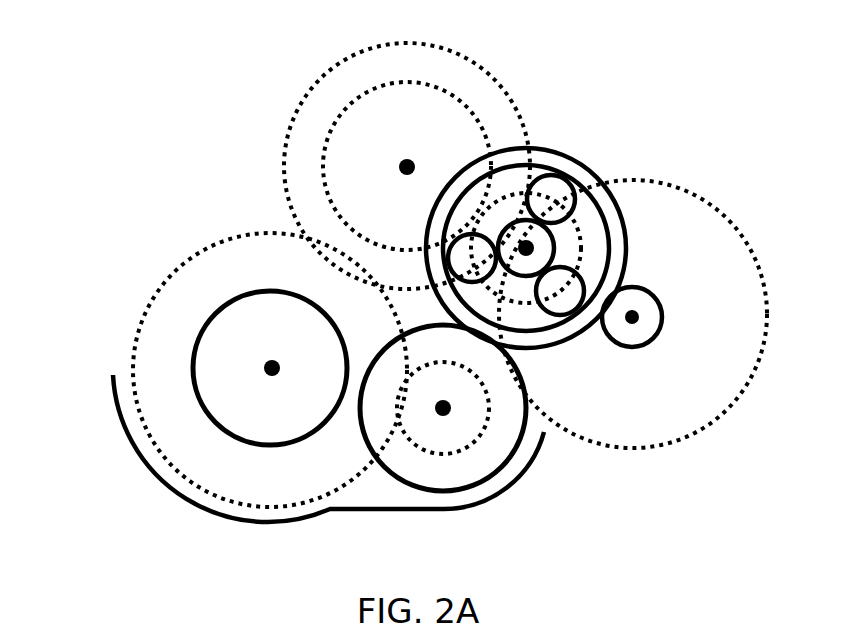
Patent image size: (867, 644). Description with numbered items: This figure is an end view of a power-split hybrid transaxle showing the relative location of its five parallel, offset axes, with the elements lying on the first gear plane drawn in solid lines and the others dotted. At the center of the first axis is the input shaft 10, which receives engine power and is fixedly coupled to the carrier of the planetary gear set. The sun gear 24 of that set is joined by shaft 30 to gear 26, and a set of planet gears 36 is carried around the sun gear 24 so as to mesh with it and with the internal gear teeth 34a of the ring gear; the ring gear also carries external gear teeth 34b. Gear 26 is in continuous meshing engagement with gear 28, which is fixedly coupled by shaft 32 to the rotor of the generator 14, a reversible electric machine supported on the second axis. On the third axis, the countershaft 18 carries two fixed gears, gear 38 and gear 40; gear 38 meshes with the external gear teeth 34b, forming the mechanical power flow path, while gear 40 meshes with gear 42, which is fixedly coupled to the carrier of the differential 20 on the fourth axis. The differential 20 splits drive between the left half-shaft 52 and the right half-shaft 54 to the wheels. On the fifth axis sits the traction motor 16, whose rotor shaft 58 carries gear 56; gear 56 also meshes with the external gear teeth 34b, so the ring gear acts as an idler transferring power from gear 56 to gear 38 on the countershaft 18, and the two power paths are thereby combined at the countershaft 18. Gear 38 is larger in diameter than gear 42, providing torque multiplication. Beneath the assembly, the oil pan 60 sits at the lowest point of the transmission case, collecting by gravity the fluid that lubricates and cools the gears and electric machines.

The input shaft 10 is at (584, 235).
The shaft 30 is at (584, 235).
The generator 14 is at (293, 112).
The gear 28 is at (373, 90).
The shaft 32 is at (406, 167).
The gear 26 is at (491, 193).
The sun gear 24 is at (556, 248).
The planet gears 36 is at (560, 284).
The internal gear teeth 34a is at (526, 333).
The external gear teeth 34b is at (573, 333).
The traction motor 16 is at (650, 448).
The gear 56 is at (637, 347).
The rotor shaft 58 is at (640, 316).
The gear 42 is at (158, 290).
The differential 20 is at (247, 293).
The left half-shaft 52 is at (236, 417).
The right half-shaft 54 is at (271, 374).
The oil pan 60 is at (143, 462).
The gear 38 is at (393, 478).
The gear 40 is at (455, 453).
The countershaft 18 is at (447, 409).